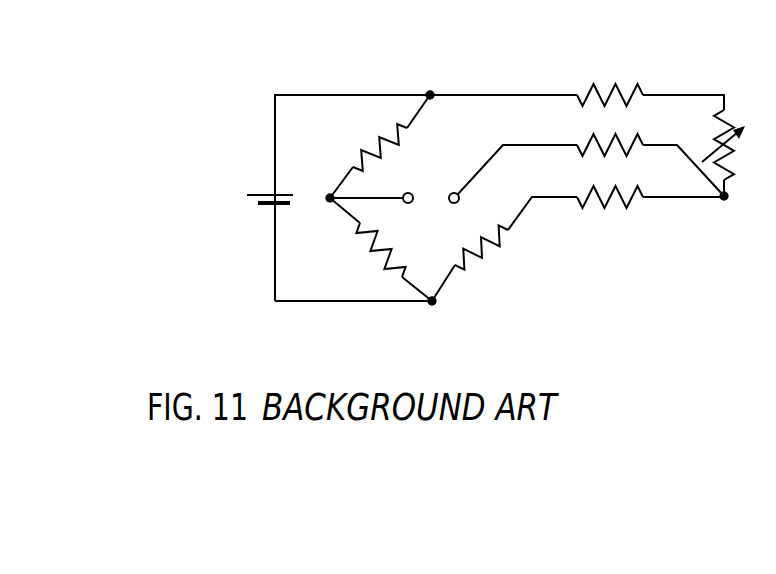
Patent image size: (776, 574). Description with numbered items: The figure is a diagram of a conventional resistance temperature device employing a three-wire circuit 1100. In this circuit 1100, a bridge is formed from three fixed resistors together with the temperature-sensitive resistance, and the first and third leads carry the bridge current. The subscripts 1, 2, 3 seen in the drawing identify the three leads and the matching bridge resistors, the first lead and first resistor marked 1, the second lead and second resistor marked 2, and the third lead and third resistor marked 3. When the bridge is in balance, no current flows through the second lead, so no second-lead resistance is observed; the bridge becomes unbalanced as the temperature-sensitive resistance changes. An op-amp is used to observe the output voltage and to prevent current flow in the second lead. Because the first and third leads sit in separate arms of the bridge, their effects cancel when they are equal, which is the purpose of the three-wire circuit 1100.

The 3-wire circuit 1100 is at (505, 228).
The resistor R1 1 is at (380, 146).
The resistor R2 2 is at (381, 249).
The resistor R3 3 is at (470, 263).